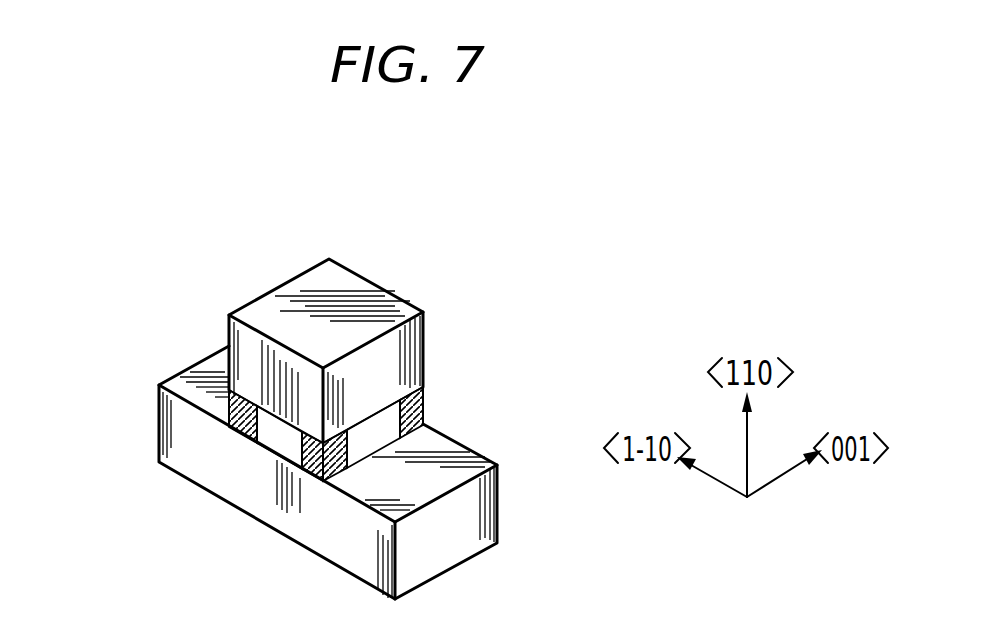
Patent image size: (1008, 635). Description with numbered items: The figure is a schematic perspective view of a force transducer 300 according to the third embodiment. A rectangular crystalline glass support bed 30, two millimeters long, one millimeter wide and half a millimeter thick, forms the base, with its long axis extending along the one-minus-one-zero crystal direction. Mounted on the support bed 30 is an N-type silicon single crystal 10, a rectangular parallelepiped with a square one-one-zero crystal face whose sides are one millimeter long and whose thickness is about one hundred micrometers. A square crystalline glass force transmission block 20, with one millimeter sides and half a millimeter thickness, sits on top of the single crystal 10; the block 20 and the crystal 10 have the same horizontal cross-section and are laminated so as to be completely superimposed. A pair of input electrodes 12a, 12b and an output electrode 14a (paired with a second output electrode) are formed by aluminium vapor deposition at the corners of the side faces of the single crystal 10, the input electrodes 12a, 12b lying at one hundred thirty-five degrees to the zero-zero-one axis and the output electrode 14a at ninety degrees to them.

The force transducer 300 is at (330, 394).
The force transmission block 20 is at (423, 327).
The N-type silicon single crystal 10 is at (373, 427).
The input electrode 12a is at (428, 410).
The input electrode 12b is at (238, 430).
The output electrode 14a is at (310, 477).
The support bed 30 is at (455, 543).